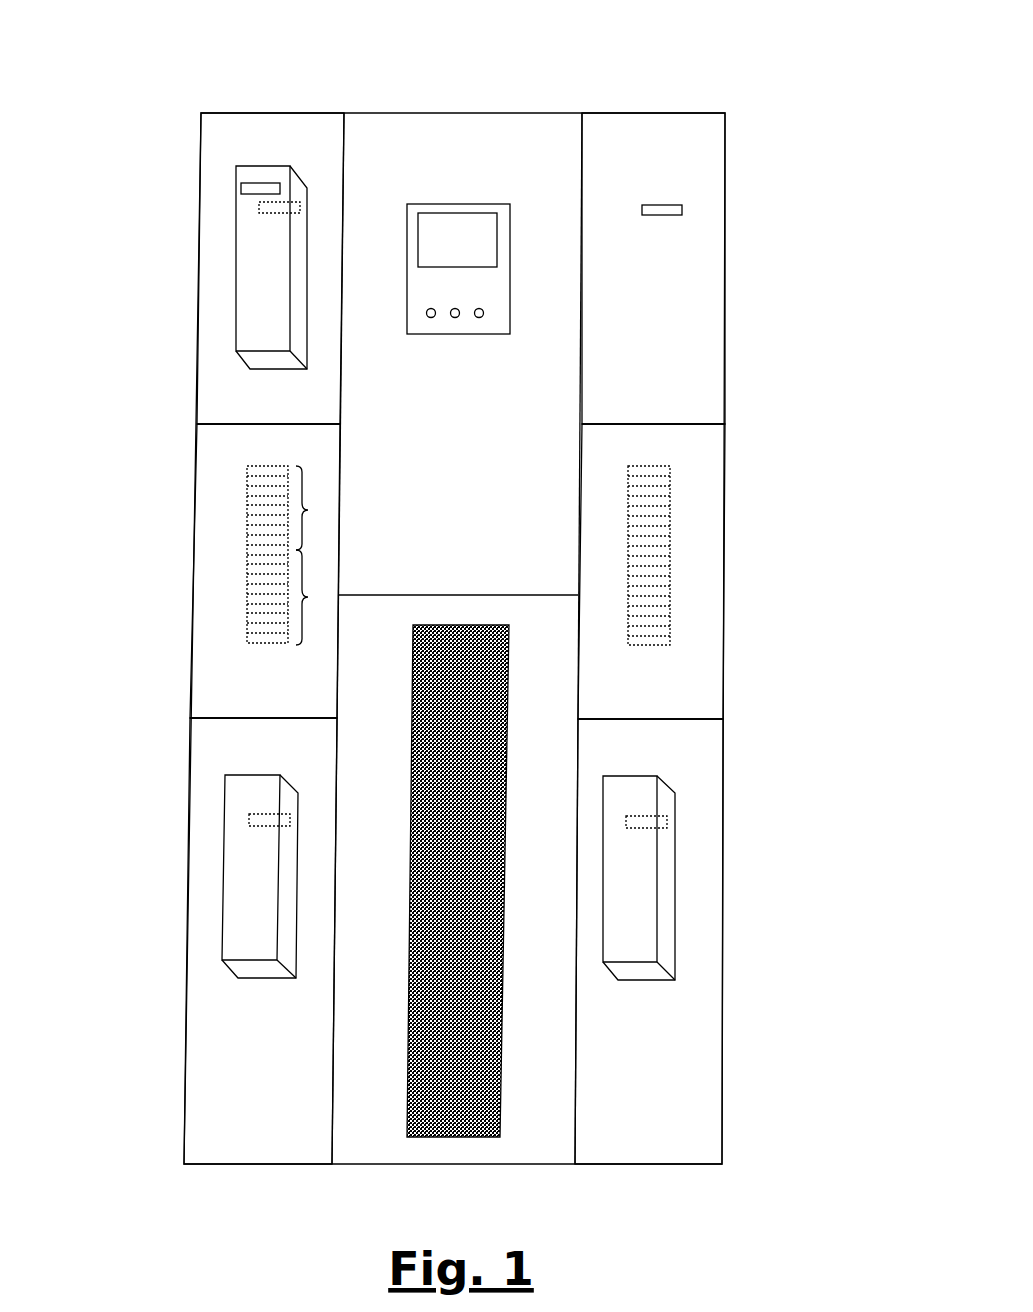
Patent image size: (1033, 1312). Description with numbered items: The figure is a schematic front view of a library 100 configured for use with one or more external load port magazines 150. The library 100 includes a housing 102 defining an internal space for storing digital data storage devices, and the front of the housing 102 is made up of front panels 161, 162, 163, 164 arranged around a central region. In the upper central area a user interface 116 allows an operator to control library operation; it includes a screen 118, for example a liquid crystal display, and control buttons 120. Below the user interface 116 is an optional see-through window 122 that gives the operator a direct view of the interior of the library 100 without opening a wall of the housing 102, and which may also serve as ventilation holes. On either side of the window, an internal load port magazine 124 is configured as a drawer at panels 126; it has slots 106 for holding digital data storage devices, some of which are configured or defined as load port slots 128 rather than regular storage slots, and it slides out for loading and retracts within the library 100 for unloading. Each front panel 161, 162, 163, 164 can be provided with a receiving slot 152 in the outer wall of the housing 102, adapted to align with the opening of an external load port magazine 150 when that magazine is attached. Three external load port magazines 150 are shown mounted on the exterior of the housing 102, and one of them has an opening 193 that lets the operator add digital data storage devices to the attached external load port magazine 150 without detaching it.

The library 100 is at (225, 75).
The housing 102 is at (632, 112).
The cells 106 is at (312, 597).
The user interface 116 is at (435, 205).
The screen 118 is at (458, 228).
The control buttons 120 is at (427, 315).
The see-through window 122 is at (413, 1015).
The internal load port magazine 124 is at (248, 565).
The panels 126 is at (208, 684).
The load port slots 128 is at (312, 510).
The external load port magazine 150 is at (253, 238).
The receiving slot 152 is at (668, 210).
The front panel 161 is at (210, 320).
The front panel 162 is at (702, 355).
The front panel 163 is at (200, 1003).
The front panel 164 is at (705, 1022).
The opening 193 is at (248, 186).